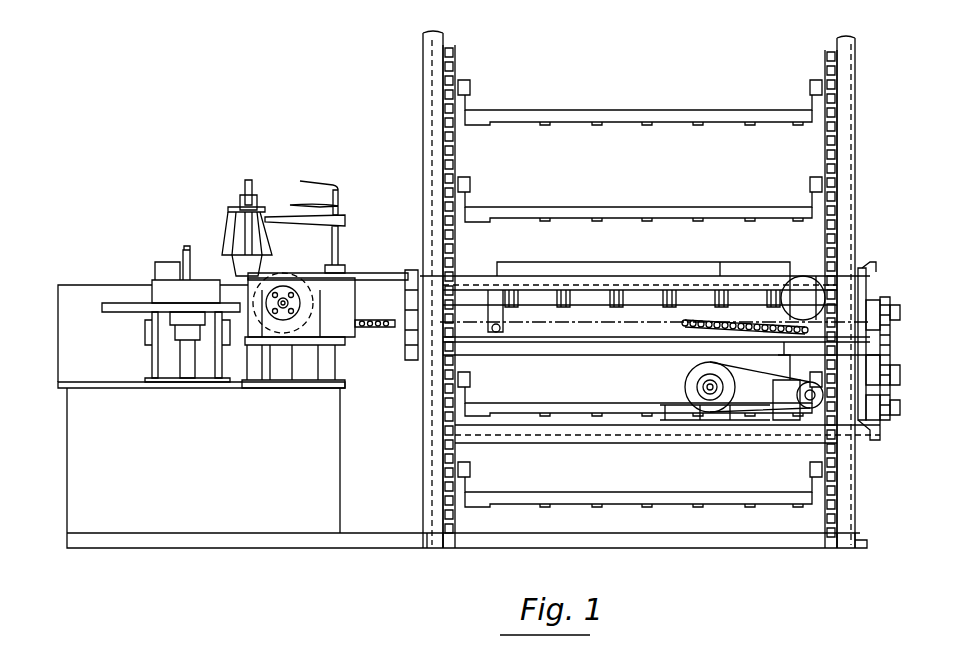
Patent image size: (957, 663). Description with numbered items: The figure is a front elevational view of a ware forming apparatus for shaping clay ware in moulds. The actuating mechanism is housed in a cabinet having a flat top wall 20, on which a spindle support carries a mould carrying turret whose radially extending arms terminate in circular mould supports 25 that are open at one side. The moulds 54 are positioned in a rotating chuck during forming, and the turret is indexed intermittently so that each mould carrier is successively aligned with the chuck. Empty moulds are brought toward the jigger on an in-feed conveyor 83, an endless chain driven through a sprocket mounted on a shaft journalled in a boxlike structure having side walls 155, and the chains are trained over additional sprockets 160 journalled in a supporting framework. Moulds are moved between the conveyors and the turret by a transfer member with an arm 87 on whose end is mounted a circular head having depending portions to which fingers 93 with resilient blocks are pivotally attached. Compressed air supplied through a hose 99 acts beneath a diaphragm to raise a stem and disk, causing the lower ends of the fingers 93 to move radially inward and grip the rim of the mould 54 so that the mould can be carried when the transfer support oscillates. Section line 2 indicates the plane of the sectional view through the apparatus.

The section line 2- 2 is at (220, 172).
The flat top wall 20 is at (98, 383).
The circular mould supports 25 is at (108, 313).
The moulds 54 is at (262, 268).
The in-feed conveyor 83 is at (372, 274).
The arm 87 is at (290, 225).
The fingers 93 is at (230, 232).
The hose 99 is at (338, 192).
The side walls 155 is at (316, 295).
The sprockets 160 is at (770, 321).